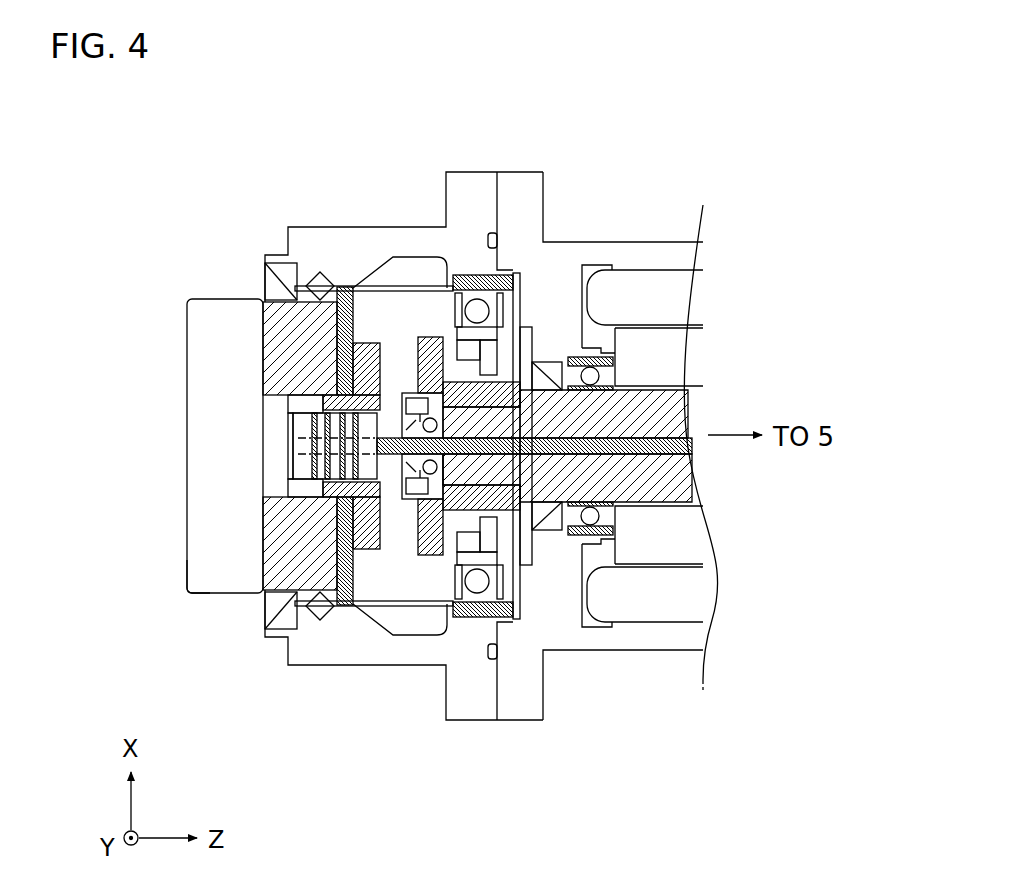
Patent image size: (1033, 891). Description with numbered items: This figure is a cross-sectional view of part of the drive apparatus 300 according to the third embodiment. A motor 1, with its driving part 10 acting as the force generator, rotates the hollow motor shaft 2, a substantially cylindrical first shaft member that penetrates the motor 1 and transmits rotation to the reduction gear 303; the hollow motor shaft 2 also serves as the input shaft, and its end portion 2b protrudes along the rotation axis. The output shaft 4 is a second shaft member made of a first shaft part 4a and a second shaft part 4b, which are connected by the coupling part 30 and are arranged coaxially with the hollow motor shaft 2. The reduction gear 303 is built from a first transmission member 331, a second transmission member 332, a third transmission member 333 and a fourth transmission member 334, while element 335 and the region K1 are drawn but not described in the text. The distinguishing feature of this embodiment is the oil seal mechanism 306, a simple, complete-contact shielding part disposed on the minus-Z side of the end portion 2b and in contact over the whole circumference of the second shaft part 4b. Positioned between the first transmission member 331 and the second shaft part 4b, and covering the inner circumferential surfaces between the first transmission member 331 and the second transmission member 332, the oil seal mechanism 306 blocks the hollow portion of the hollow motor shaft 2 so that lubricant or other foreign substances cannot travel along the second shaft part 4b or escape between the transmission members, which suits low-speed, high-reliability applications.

The drive apparatus 300 is at (690, 176).
The motor 1 is at (640, 241).
The driving part 10 is at (675, 298).
The hollow motor shaft 2 is at (676, 410).
The end portion 2b is at (478, 398).
The output shaft 4 is at (183, 478).
The first shaft part 4a is at (203, 572).
The second shaft part 4b is at (688, 451).
The coupling part 30 is at (302, 470).
The reduction gear 303 is at (323, 668).
The oil seal mechanism 306 is at (404, 500).
The first transmission member 331 is at (430, 336).
The second transmission member 332 is at (392, 282).
The third transmission member 333 is at (462, 274).
The fourth transmission member 334 is at (282, 291).
The ring member 335 is at (370, 347).
The clearance K1 is at (454, 478).